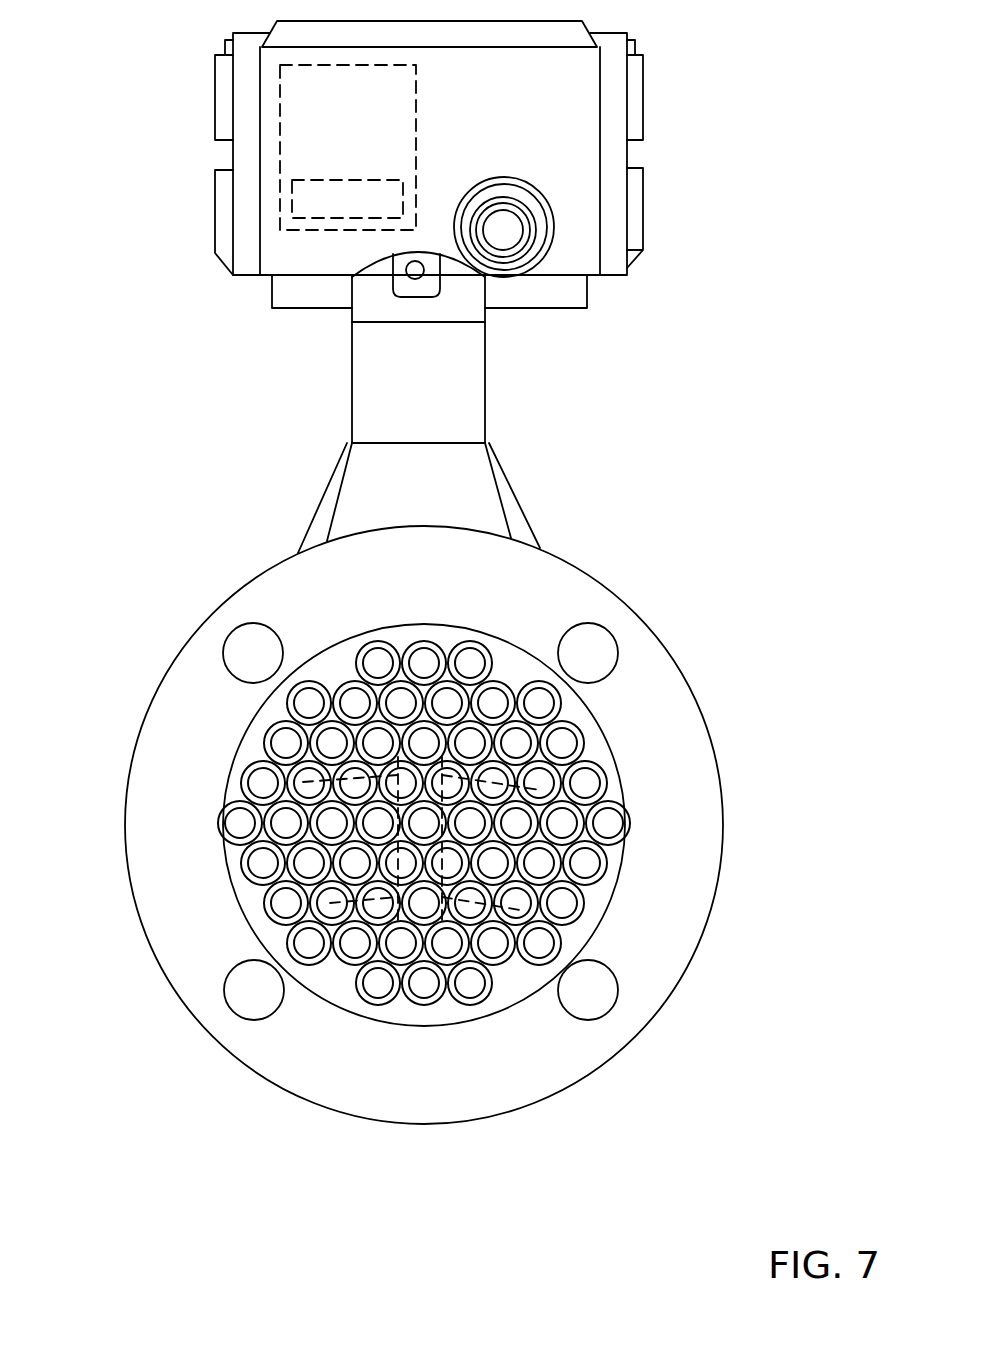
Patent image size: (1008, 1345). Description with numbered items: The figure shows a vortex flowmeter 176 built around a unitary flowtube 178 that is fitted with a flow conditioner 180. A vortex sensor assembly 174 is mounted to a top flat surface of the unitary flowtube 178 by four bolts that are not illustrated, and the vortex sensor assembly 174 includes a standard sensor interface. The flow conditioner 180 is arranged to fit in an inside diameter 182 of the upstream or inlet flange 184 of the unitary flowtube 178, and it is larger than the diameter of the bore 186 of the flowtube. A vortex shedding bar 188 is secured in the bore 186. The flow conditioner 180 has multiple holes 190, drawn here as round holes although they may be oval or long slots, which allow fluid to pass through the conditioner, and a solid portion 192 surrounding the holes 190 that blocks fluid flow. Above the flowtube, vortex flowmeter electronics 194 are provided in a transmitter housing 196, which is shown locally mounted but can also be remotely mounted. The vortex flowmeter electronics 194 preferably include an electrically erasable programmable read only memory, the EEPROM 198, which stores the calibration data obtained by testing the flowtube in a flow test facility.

The vortex sensor assembly 174 is at (435, 403).
The vortex flowmeter 176 is at (730, 112).
The unitary flowtube 178 is at (177, 508).
The flow conditioner 180 is at (565, 720).
The inside diameter 182 is at (503, 637).
The inlet flange 184 is at (633, 608).
The bore 186 is at (436, 940).
The vortex shedding bar 188 is at (400, 790).
The holes 190 is at (287, 902).
The solid portion 192 is at (333, 962).
The vortex flowmeter electronics 194 is at (280, 74).
The transmitter housing 196 is at (215, 240).
The EEPROM 198 is at (292, 190).